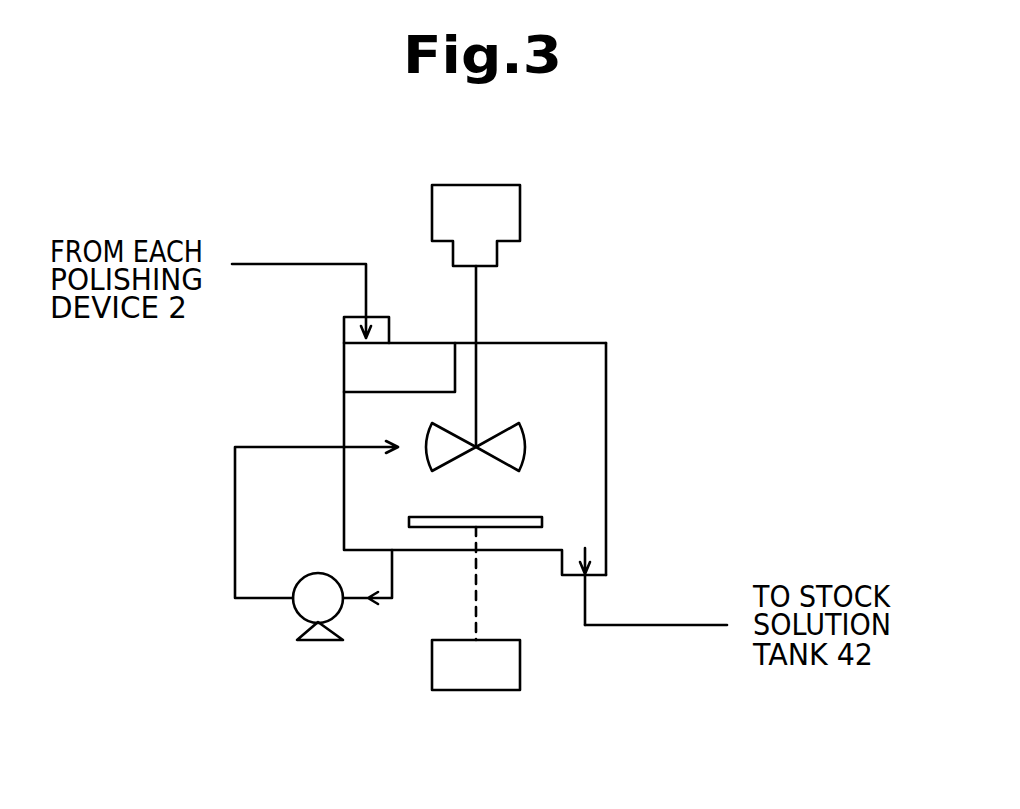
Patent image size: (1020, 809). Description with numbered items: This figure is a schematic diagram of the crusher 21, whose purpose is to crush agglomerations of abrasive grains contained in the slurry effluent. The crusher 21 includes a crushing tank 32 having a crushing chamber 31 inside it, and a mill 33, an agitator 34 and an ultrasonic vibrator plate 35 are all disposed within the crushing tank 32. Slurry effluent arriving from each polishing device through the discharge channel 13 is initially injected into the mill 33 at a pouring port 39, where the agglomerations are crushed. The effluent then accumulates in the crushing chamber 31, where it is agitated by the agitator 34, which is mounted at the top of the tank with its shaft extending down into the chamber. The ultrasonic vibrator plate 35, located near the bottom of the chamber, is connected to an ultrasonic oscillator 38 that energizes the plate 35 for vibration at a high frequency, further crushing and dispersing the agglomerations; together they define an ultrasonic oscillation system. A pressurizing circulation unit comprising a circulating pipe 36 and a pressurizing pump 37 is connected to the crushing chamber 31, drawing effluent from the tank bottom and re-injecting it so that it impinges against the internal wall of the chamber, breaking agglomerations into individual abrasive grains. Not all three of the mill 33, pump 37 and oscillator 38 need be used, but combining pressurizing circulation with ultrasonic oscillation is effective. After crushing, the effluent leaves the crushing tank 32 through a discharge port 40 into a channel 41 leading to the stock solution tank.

The discharge channel 13 is at (292, 264).
The crusher 21 is at (623, 304).
The crushing chamber 31 is at (606, 500).
The crushing tank 32 is at (606, 447).
The mill 33 is at (350, 370).
The agitator 34 is at (477, 185).
The ultrasonic vibrator plate 35 is at (530, 517).
The circulating pipe 36 is at (235, 532).
The pressurizing pump 37 is at (296, 615).
The ultrasonic oscillator 38 is at (478, 692).
The pouring port 39 is at (345, 330).
The discharge port 40 is at (606, 570).
The channel 41 is at (670, 626).